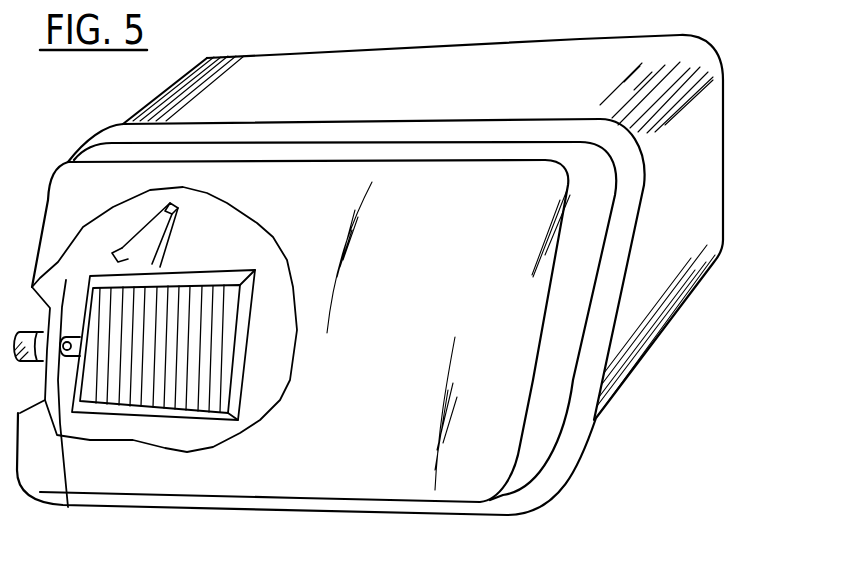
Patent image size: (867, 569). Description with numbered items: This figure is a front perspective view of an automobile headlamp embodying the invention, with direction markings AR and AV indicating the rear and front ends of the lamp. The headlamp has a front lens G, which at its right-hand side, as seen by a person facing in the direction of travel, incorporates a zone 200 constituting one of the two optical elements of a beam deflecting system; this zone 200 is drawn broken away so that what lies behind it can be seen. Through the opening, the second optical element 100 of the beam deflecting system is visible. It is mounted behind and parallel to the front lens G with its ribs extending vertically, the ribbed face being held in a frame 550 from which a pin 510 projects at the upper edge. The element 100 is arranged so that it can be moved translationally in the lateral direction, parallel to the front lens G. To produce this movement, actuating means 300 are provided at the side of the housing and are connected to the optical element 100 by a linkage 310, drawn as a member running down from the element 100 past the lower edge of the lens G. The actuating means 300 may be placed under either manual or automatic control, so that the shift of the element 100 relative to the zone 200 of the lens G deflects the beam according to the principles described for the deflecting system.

The second optical element 100 is at (160, 348).
The connector frame 550 is at (217, 273).
The connector pin 510 is at (165, 246).
The actuating means 300 is at (17, 363).
The linkage 310 is at (76, 410).
The zone 200 is at (247, 437).
The front lens G is at (370, 275).
The rear direction AR is at (470, 17).
The front direction AV is at (208, 529).